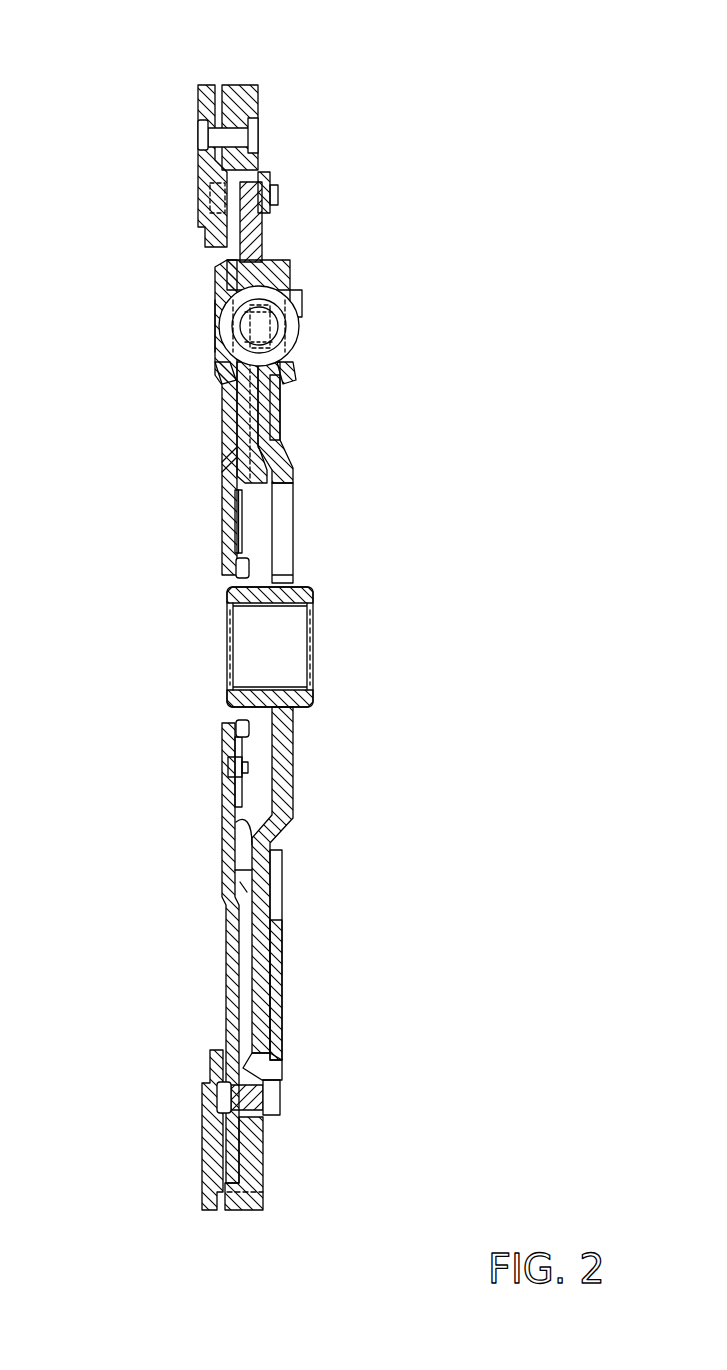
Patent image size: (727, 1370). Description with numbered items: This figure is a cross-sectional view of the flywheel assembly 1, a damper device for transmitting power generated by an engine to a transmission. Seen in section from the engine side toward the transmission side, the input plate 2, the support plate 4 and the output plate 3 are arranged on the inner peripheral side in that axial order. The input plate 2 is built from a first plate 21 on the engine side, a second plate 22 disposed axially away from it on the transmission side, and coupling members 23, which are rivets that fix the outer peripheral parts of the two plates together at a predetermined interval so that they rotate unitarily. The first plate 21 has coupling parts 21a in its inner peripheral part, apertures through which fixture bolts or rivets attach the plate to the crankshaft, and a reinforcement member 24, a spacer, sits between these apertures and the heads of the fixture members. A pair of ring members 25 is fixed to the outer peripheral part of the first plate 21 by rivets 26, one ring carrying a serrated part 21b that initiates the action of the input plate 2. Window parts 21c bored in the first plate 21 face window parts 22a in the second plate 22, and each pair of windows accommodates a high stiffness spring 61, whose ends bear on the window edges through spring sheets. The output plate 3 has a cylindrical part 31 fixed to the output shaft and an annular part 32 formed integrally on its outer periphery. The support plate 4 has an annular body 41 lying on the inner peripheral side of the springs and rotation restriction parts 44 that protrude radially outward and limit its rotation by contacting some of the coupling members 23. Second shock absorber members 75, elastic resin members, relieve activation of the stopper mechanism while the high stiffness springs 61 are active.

The flywheel assembly 1 is at (326, 96).
The input plate 2 is at (207, 283).
The output plate 3 is at (320, 463).
The support plate 4 is at (242, 382).
The first plate 21 is at (220, 430).
The coupling parts 21a is at (207, 535).
The serrated part 21b is at (240, 96).
The window parts 21c is at (210, 330).
The second plate 22 is at (282, 397).
The window parts 22a is at (316, 310).
The coupling members 23 is at (274, 200).
The reinforcement member 24 is at (248, 575).
The ring members 25 is at (203, 67).
The rivets 26 is at (198, 137).
The cylindrical part 31 is at (303, 707).
The annular part 32 is at (287, 745).
The annular body 41 is at (231, 450).
The rotation restriction parts 44 is at (264, 186).
The high stiffness springs 61 is at (306, 343).
The second shock absorber members 75 is at (266, 326).